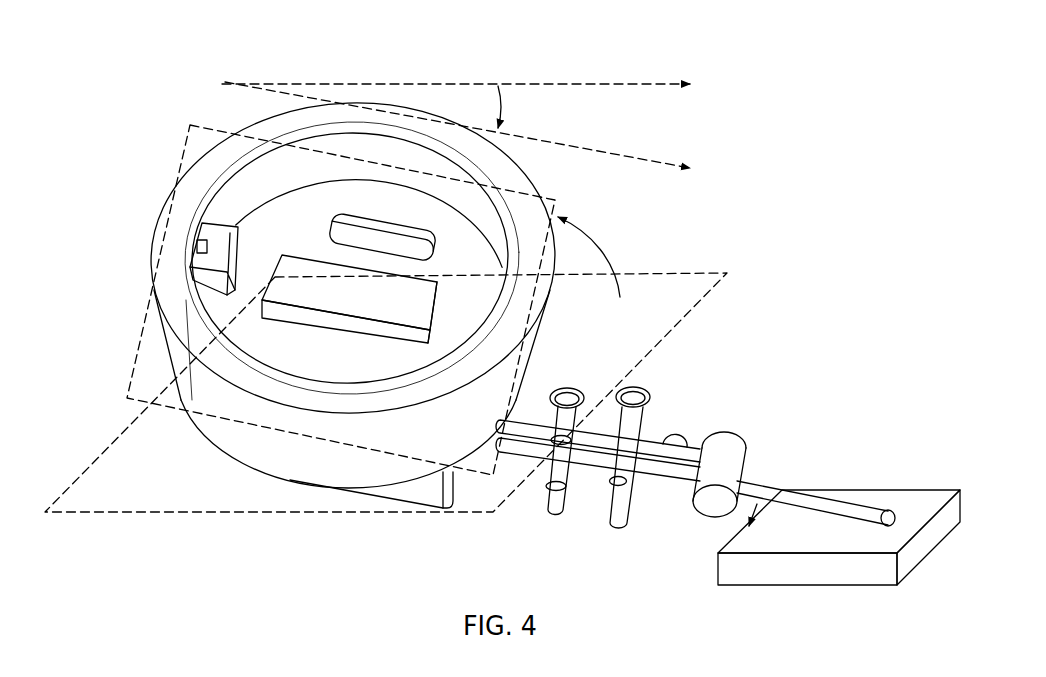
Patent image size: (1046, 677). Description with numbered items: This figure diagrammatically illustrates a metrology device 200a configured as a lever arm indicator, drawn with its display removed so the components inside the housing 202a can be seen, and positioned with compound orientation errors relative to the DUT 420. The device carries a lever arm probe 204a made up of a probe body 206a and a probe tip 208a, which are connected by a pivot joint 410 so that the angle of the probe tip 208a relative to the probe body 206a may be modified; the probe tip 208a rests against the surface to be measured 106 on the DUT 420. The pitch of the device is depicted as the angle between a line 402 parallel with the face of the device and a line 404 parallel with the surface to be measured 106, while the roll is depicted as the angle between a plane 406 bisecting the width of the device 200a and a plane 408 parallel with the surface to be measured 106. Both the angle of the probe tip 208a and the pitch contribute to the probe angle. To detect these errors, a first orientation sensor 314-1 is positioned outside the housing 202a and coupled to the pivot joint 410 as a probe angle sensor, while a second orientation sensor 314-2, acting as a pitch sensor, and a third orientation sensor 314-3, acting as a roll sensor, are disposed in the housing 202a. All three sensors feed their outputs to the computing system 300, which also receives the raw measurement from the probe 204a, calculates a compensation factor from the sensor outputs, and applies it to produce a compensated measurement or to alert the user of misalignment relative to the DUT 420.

The surface to be measured 106 is at (839, 518).
The metrology device 200a is at (211, 72).
The housing 202a is at (268, 462).
The lever arm probe 204a is at (665, 405).
The probe body 206a is at (675, 480).
The probe tip 208a is at (801, 504).
The computing system 300 is at (369, 305).
The first orientation sensor 314-1 is at (724, 447).
The second orientation sensor 314-2 is at (438, 252).
The third orientation sensor 314-3 is at (212, 283).
The line parallel with the face of device 402 is at (549, 140).
The line parallel with the surface to be measured 404 is at (604, 84).
The plane bisecting the width of the device 406 is at (217, 129).
The plane parallel with the surface to be measured 408 is at (493, 512).
The pivot joint 410 is at (736, 432).
The DUT 420 is at (868, 475).